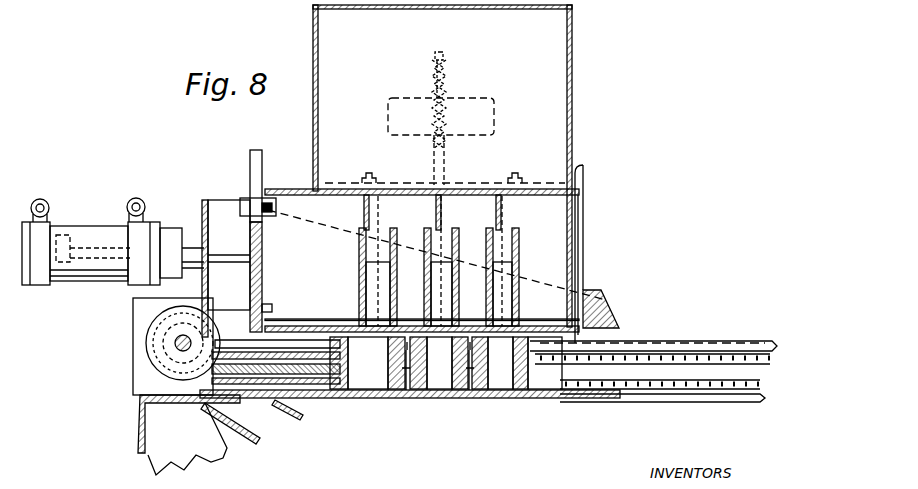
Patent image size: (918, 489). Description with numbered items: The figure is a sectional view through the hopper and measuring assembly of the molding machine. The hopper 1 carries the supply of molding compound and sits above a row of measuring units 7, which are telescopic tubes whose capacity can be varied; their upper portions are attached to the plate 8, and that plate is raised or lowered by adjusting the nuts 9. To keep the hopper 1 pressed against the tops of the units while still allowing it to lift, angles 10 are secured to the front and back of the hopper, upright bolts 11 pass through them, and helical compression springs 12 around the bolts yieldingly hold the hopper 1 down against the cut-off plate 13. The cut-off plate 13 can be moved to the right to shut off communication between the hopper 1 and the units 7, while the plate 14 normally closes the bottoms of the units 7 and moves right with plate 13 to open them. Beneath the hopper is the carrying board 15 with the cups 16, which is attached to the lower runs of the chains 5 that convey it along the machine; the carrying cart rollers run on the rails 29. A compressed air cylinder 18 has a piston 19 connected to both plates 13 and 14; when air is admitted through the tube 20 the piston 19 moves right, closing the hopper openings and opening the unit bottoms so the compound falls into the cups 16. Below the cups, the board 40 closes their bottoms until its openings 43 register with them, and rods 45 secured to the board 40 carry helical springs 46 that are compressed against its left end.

The hopper 1 is at (578, 100).
The chains 5 is at (660, 352).
The measuring units 7 is at (390, 268).
The plate 8 is at (345, 197).
The nuts 9 is at (376, 182).
The angles 10 is at (480, 110).
The upright bolts 11 is at (436, 160).
The helical compression springs 12 is at (450, 84).
The cut-off plate 13 is at (300, 188).
The plate 14 is at (320, 325).
The carrying board 15 is at (597, 398).
The cups 16 is at (378, 390).
The compressed air cylinder 18 is at (110, 230).
The piston 19 is at (64, 272).
The tube 20 is at (46, 200).
The rails 29 is at (723, 344).
The board 40 is at (487, 400).
The openings 43 is at (418, 390).
The rods 45 is at (300, 402).
The helical springs 46 is at (243, 404).